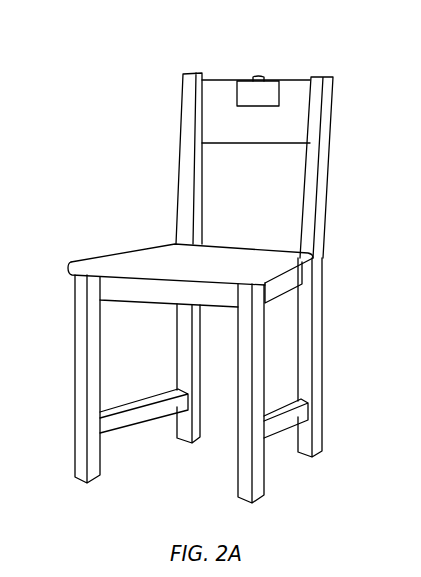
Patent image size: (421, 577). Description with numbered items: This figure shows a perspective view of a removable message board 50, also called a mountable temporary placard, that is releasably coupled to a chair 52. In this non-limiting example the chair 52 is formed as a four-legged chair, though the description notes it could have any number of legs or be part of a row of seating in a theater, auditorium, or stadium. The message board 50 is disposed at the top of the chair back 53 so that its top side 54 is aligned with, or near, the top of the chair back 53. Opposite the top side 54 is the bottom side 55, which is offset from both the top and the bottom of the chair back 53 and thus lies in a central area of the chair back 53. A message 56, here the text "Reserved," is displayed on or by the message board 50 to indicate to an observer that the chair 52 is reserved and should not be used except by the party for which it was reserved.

The removable message board 50 is at (223, 90).
The chair 52 is at (204, 256).
The chair back 53 is at (298, 125).
The top side 54 is at (270, 78).
The bottom side 55 is at (248, 107).
The message 56 is at (237, 93).